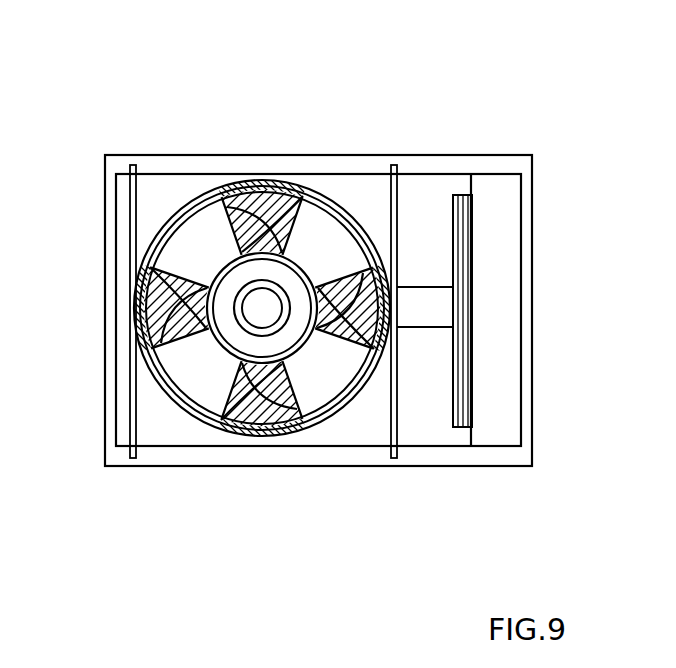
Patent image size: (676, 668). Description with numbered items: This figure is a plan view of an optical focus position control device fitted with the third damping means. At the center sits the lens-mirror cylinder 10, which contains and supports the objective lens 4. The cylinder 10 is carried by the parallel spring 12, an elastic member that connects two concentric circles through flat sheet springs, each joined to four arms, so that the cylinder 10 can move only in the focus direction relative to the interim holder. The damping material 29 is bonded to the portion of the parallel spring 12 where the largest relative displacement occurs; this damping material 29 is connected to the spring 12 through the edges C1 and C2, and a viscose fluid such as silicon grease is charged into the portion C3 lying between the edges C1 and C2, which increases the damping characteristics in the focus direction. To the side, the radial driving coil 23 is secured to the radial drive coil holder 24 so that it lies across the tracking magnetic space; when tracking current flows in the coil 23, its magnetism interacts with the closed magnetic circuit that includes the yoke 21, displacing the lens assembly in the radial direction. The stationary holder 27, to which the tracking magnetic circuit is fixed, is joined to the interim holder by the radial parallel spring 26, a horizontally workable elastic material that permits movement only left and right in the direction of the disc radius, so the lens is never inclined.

The objective lens 4 is at (271, 314).
The lens-mirror cylinder 10 is at (266, 358).
The parallel spring 12 is at (320, 232).
The yoke 21 is at (497, 182).
The radial driving coil 23 is at (458, 197).
The radial drive coil holder 24 is at (413, 300).
The parallel spring moving in the radial direction 26 is at (134, 186).
The stationary holder 27 is at (497, 455).
The damping material 29 is at (365, 580).
The edge C1 is at (257, 188).
The edge C2 is at (247, 187).
The portion between the edges C3 is at (292, 190).